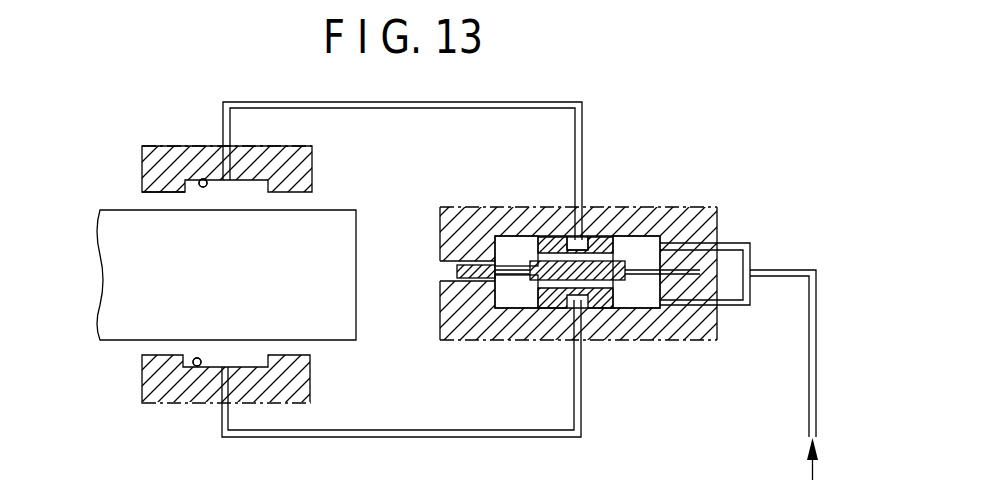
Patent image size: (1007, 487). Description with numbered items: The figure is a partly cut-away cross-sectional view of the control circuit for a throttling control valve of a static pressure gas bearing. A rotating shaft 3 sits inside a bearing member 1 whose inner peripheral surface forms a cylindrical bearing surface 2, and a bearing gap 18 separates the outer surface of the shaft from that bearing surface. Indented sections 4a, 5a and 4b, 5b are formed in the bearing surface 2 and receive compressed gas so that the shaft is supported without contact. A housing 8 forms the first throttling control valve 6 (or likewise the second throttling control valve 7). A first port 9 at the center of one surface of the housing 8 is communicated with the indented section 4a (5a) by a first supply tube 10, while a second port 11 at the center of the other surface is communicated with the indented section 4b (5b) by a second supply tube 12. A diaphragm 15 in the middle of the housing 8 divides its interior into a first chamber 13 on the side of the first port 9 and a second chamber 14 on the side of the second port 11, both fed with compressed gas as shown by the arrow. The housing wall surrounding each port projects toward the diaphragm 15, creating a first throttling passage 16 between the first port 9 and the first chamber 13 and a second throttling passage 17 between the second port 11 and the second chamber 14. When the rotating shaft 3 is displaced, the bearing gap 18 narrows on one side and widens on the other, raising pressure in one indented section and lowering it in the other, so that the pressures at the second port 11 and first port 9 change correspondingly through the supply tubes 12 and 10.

The bearing member 1 is at (307, 162).
The bearing surface 2 is at (158, 197).
The rotating shaft 3 is at (350, 267).
The indented section 4a is at (200, 180).
The indented section 5a is at (191, 142).
The indented section 4b is at (185, 373).
The indented section 5b is at (153, 402).
The first throttling control valve 6 is at (657, 195).
The second throttling control valve 7 is at (712, 162).
The housing 8 is at (703, 207).
The first port 9 is at (585, 245).
The first supply tube 10 is at (397, 111).
The second port 11 is at (573, 308).
The second supply tube 12 is at (390, 430).
The first chamber 13 is at (508, 243).
The second chamber 14 is at (512, 303).
The diaphragm 15 is at (622, 283).
The first throttling passage 16 is at (598, 258).
The second throttling passage 17 is at (598, 283).
The bearing gap 18 is at (308, 203).